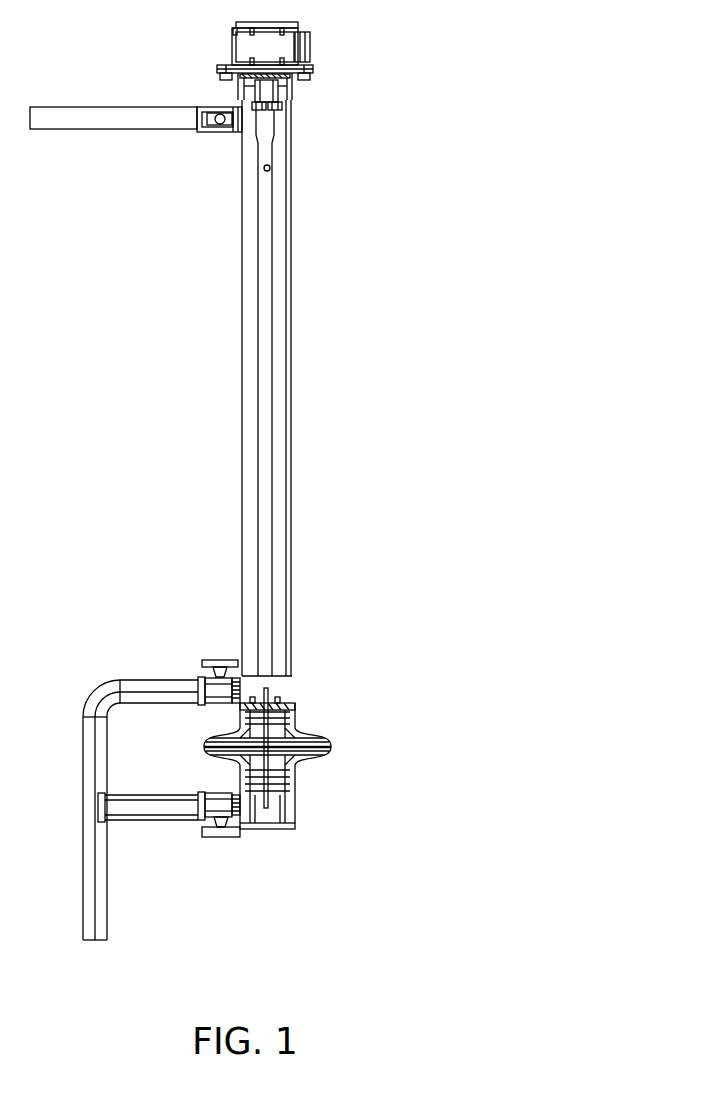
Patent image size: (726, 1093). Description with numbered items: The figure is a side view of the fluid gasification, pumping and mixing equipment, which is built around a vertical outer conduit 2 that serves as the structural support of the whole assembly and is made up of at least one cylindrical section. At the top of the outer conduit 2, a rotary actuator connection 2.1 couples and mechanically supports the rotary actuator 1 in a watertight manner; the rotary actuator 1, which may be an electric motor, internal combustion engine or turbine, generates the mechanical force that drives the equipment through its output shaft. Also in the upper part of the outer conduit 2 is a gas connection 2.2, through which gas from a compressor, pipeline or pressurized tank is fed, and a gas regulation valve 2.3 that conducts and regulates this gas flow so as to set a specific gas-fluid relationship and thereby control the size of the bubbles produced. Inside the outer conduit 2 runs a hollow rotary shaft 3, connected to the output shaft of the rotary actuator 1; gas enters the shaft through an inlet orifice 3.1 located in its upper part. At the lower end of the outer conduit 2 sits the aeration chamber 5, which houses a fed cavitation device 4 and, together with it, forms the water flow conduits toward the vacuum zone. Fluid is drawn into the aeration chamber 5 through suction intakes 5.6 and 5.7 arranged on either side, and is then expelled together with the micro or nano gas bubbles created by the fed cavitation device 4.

The rotary actuator 1 is at (308, 38).
The outer conduit 2 is at (292, 216).
The rotary actuator connection 2.1 is at (292, 102).
The gas connection 2.2 is at (240, 130).
The gas regulation valve 2.3 is at (197, 106).
The hollow rotary shaft 3 is at (267, 398).
The inlet orifice 3.1 is at (266, 120).
The fed cavitation device 4 is at (332, 747).
The aeration chamber 5 is at (306, 769).
The suction intake 5.6 is at (199, 680).
The suction intake 5.7 is at (206, 818).